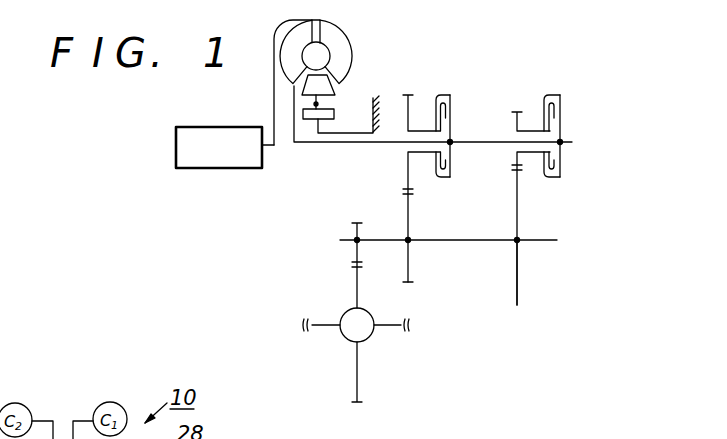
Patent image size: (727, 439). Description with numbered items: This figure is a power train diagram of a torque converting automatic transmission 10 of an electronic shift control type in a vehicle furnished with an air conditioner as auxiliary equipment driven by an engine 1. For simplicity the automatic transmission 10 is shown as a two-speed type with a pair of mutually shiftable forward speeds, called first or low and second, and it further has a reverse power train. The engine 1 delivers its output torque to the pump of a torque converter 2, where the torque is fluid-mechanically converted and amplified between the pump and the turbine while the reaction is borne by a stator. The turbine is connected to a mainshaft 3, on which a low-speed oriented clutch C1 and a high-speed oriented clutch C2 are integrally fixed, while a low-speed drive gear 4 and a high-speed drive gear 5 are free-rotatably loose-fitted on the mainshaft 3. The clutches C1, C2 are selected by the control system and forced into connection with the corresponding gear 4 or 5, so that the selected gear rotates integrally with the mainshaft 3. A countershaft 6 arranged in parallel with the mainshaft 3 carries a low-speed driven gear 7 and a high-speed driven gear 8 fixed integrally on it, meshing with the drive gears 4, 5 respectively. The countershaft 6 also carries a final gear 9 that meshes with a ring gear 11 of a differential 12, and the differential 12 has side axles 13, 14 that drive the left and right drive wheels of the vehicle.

The engine 1 is at (176, 145).
The torque converter 2 is at (353, 39).
The mainshaft 3 is at (381, 143).
The low-speed drive gear 4 is at (517, 111).
The high-speed drive gear 5 is at (408, 94).
The low-speed oriented clutch C1 is at (568, 107).
The high-speed oriented clutch C2 is at (455, 118).
The countershaft 6 is at (461, 238).
The low-speed driven gear 7 is at (518, 284).
The high-speed driven gear 8 is at (410, 284).
The final gear 9 is at (357, 222).
The automatic transmission 10 is at (283, 229).
The ring gear 11 is at (357, 403).
The differential 12 is at (345, 309).
The side axle 13 is at (324, 329).
The side axle 14 is at (397, 330).